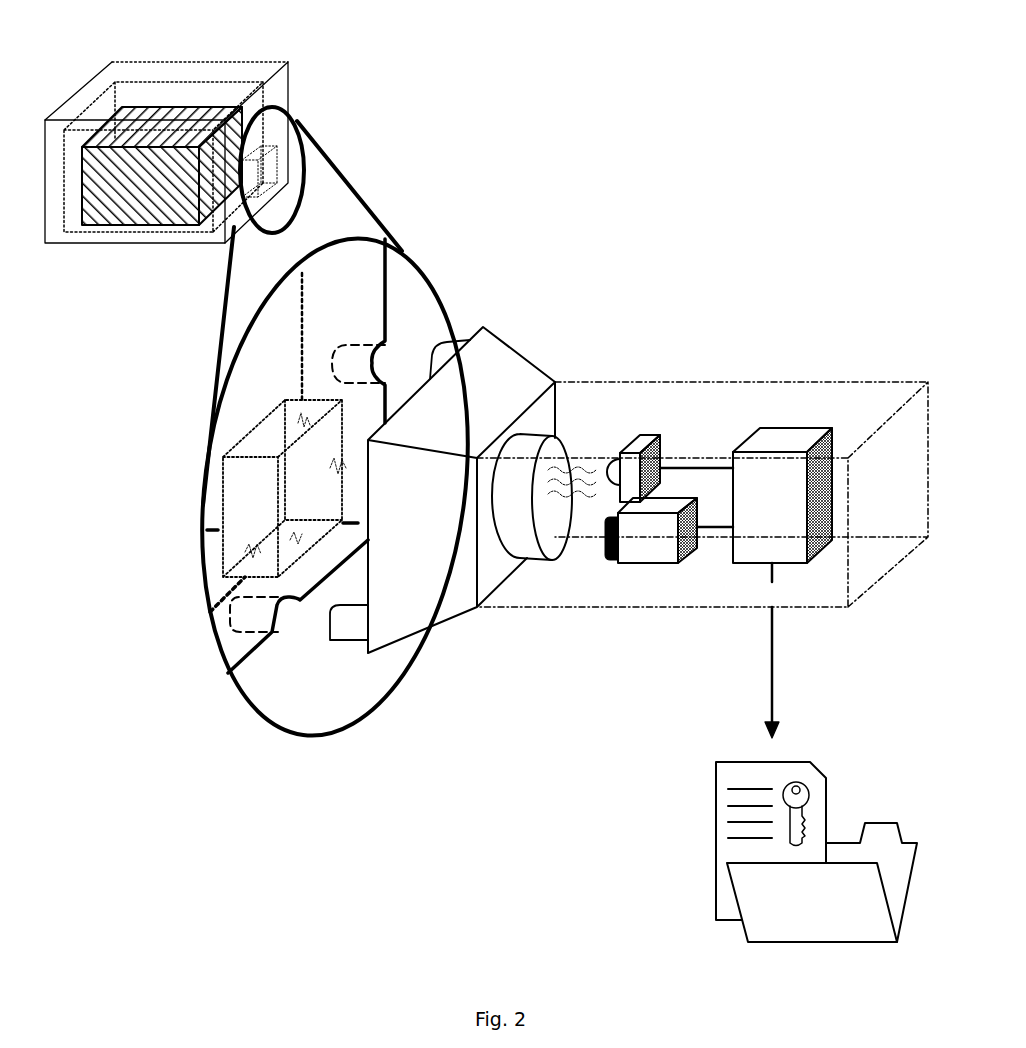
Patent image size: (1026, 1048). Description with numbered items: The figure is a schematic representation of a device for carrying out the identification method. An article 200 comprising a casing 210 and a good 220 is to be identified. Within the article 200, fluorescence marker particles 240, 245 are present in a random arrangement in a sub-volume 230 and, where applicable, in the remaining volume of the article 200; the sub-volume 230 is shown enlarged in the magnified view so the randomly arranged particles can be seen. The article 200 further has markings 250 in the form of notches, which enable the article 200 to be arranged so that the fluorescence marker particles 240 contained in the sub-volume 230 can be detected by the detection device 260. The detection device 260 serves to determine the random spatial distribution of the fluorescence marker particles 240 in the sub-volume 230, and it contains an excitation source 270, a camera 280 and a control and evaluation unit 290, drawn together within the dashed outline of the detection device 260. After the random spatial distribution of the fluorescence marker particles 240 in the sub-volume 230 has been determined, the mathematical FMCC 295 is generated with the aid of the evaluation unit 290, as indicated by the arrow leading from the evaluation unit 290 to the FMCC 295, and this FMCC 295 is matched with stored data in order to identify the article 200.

The article 200 is at (54, 95).
The casing 210 is at (180, 60).
The good 220 is at (113, 240).
The sub-volume 230 is at (303, 134).
The fluorescence marker particles 240 is at (262, 556).
The fluorescence marker particles 245 is at (358, 278).
The markings 250 is at (377, 360).
The detection device 260 is at (613, 370).
The excitation source 270 is at (648, 438).
The camera 280 is at (648, 562).
The control and evaluation unit 290 is at (793, 435).
The mathematical FMCC 295 is at (713, 860).